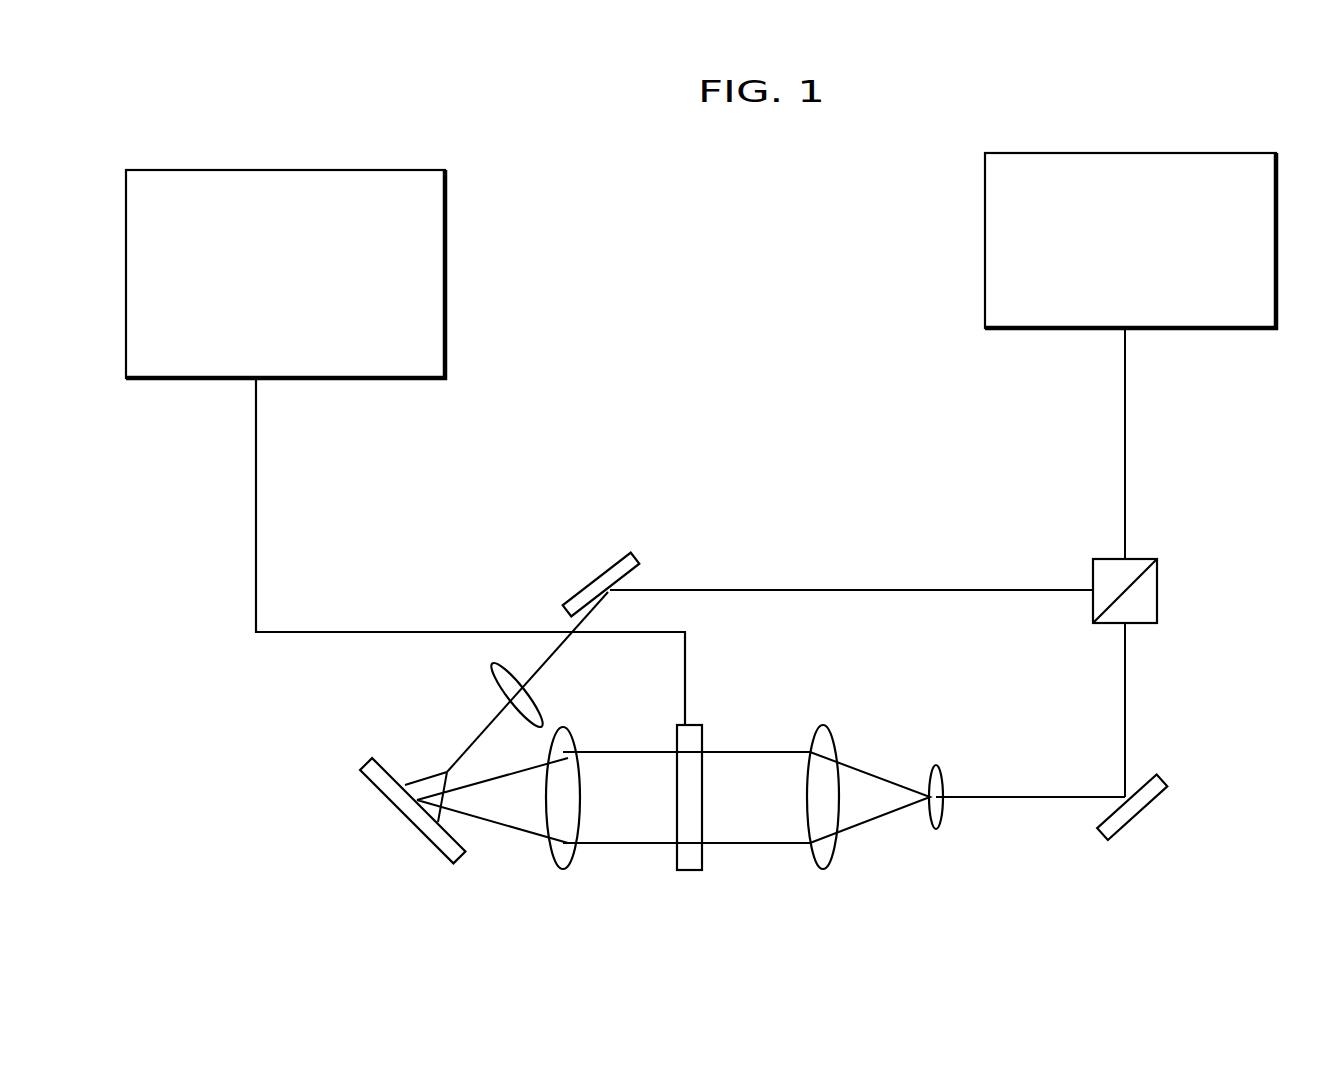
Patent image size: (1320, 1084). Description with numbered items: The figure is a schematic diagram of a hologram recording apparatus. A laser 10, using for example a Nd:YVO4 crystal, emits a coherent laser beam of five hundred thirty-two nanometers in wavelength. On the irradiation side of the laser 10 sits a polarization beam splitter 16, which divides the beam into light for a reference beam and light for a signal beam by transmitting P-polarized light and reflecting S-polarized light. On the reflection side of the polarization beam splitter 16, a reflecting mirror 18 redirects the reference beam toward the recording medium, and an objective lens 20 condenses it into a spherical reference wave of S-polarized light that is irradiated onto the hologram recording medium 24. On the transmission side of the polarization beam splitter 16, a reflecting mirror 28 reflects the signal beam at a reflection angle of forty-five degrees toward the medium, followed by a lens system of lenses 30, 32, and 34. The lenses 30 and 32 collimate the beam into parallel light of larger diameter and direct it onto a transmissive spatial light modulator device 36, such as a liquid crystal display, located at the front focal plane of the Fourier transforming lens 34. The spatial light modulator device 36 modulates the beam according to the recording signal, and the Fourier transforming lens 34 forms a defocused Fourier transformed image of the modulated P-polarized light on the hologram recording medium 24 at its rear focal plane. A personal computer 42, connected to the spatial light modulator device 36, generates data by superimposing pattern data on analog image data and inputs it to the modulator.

The laser 10 is at (1187, 176).
The polarization beam splitter 16 is at (1160, 597).
The reflecting mirror 18 is at (598, 572).
The objective lens 20 is at (535, 699).
The hologram recording medium 24 is at (425, 847).
The reflecting mirror 28 is at (1138, 817).
The lens 30 is at (934, 830).
The lens 32 is at (813, 860).
The Fourier transforming lens 34 is at (553, 860).
The transmissive spatial light modulator device 36 is at (683, 872).
The personal computer 42 is at (286, 183).